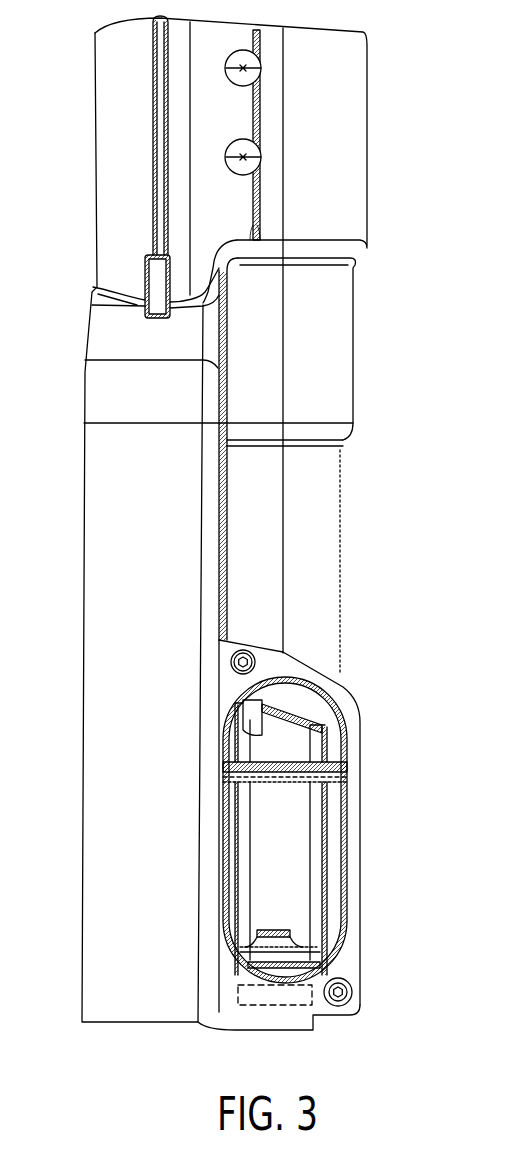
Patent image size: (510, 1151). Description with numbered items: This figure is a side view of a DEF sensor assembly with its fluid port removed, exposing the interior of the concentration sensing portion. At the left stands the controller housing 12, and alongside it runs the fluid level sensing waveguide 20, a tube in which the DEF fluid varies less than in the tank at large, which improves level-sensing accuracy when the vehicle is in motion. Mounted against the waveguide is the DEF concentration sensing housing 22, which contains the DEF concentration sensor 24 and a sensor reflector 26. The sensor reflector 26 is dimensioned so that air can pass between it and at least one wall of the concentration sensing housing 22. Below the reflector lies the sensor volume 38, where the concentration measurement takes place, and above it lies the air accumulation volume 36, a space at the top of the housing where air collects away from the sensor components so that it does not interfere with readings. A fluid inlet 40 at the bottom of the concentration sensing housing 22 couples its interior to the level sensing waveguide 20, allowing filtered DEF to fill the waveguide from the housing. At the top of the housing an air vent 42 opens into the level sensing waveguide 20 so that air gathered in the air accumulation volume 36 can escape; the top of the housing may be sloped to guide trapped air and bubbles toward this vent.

The controller housing 12 is at (93, 860).
The fluid level sensing waveguide 20 is at (315, 525).
The DEF concentration sensing housing 22 is at (348, 895).
The DEF concentration sensor 24 is at (297, 1005).
The sensor reflector 26 is at (297, 780).
The air accumulation volume 36 is at (293, 742).
The sensor volume 38 is at (283, 853).
The fluid inlet 40 is at (290, 932).
The air vent 42 is at (250, 712).